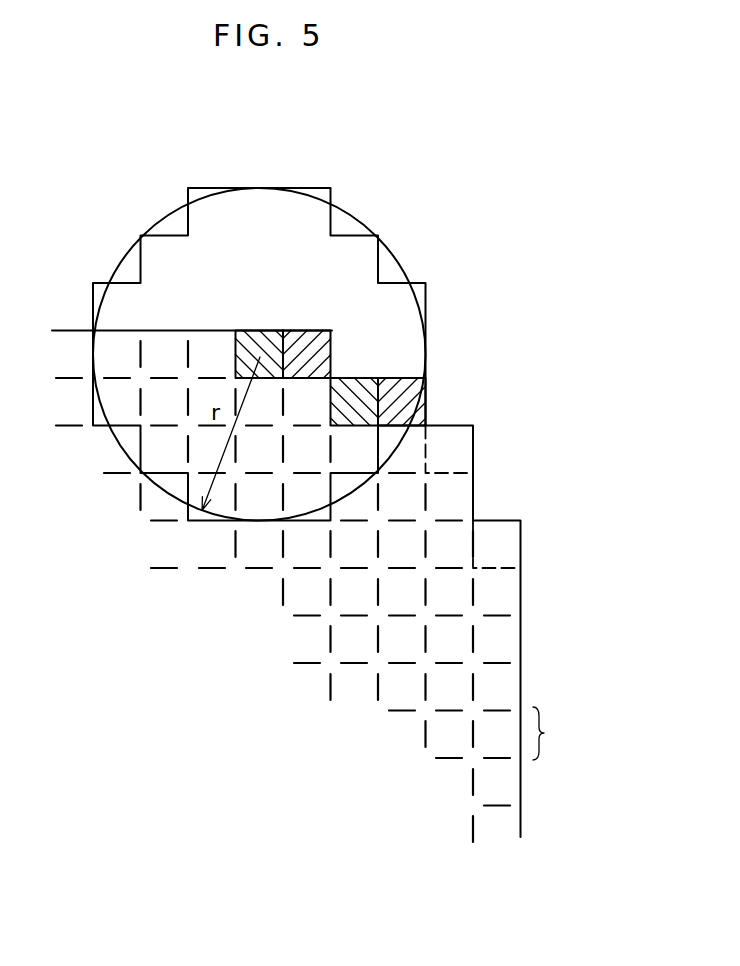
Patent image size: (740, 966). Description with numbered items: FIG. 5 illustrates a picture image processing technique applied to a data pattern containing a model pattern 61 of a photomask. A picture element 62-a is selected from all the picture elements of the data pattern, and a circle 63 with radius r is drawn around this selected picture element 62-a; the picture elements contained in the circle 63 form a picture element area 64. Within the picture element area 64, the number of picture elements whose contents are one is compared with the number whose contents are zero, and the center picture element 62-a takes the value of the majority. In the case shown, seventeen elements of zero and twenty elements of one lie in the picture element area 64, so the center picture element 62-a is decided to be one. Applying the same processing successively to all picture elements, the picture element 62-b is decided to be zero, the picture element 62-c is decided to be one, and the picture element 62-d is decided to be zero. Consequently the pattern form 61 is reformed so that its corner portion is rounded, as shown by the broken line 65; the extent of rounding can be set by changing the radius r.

The model pattern 61 is at (508, 600).
The picture element 62-a is at (252, 337).
The picture element 62-b is at (308, 340).
The picture element 62-c is at (352, 390).
The picture element 62-d is at (400, 388).
The circle 63 is at (165, 215).
The picture element area 64 is at (313, 188).
The broken line 65 is at (450, 471).